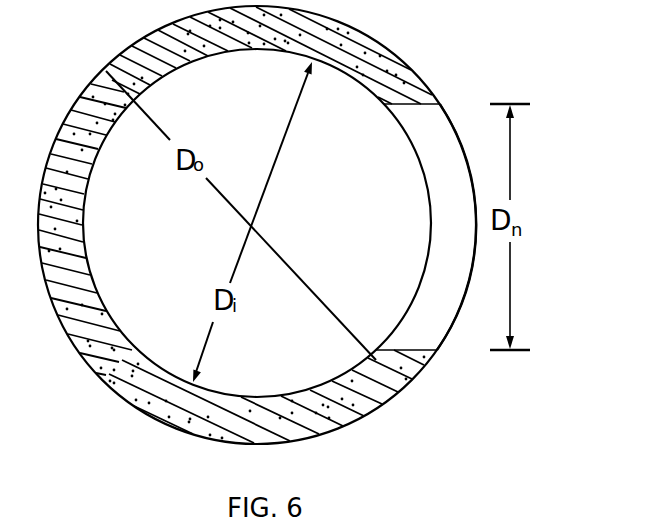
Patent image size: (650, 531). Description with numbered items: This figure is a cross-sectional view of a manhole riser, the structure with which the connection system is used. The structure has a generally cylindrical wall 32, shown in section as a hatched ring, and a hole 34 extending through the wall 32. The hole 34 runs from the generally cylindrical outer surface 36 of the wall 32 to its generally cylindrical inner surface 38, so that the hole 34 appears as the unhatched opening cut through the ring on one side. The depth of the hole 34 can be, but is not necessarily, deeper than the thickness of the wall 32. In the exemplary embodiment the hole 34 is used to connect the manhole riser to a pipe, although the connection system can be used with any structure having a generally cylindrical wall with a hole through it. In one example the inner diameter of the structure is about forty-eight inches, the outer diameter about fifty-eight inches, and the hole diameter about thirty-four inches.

The wall 32 is at (138, 50).
The hole 34 is at (424, 223).
The outer surface 36 is at (401, 63).
The inner surface 38 is at (372, 93).